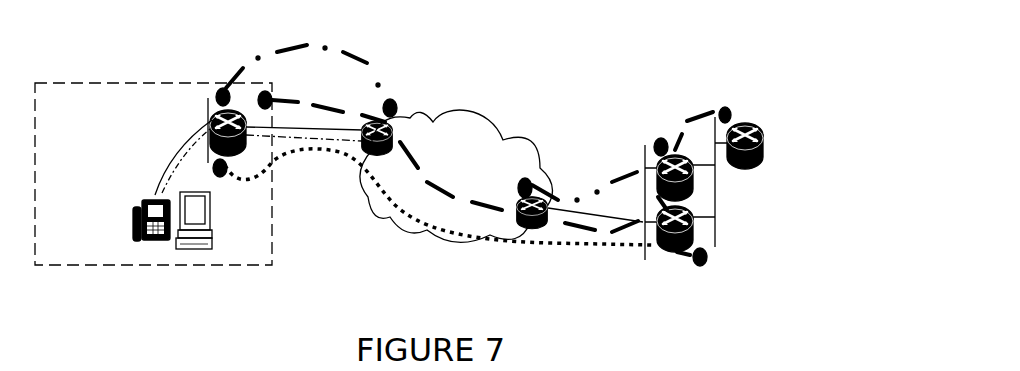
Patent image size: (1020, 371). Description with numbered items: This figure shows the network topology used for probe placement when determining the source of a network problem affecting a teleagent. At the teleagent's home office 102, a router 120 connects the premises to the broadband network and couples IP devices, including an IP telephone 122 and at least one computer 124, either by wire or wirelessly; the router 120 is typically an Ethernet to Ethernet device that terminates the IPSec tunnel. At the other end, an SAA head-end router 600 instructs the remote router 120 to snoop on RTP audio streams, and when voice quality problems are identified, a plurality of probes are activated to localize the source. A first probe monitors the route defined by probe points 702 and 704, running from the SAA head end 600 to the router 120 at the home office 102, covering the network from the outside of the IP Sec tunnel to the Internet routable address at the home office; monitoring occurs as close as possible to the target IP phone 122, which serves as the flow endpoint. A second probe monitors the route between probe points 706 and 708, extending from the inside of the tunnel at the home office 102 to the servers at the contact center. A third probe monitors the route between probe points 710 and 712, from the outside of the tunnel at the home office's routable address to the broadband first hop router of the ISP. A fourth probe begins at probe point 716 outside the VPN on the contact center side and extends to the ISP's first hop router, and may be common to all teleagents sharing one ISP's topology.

The home office 102 is at (88, 256).
The router 120 is at (210, 122).
The IP telephone 122 is at (137, 210).
The computer 124 is at (207, 220).
The SAA head-end router 600 is at (763, 130).
The probe point 702 is at (720, 109).
The probe point 704 is at (273, 98).
The probe point 706 is at (227, 172).
The probe point 708 is at (697, 268).
The probe point 710 is at (218, 90).
The probe point 712 is at (397, 102).
The probe point 716 is at (538, 168).